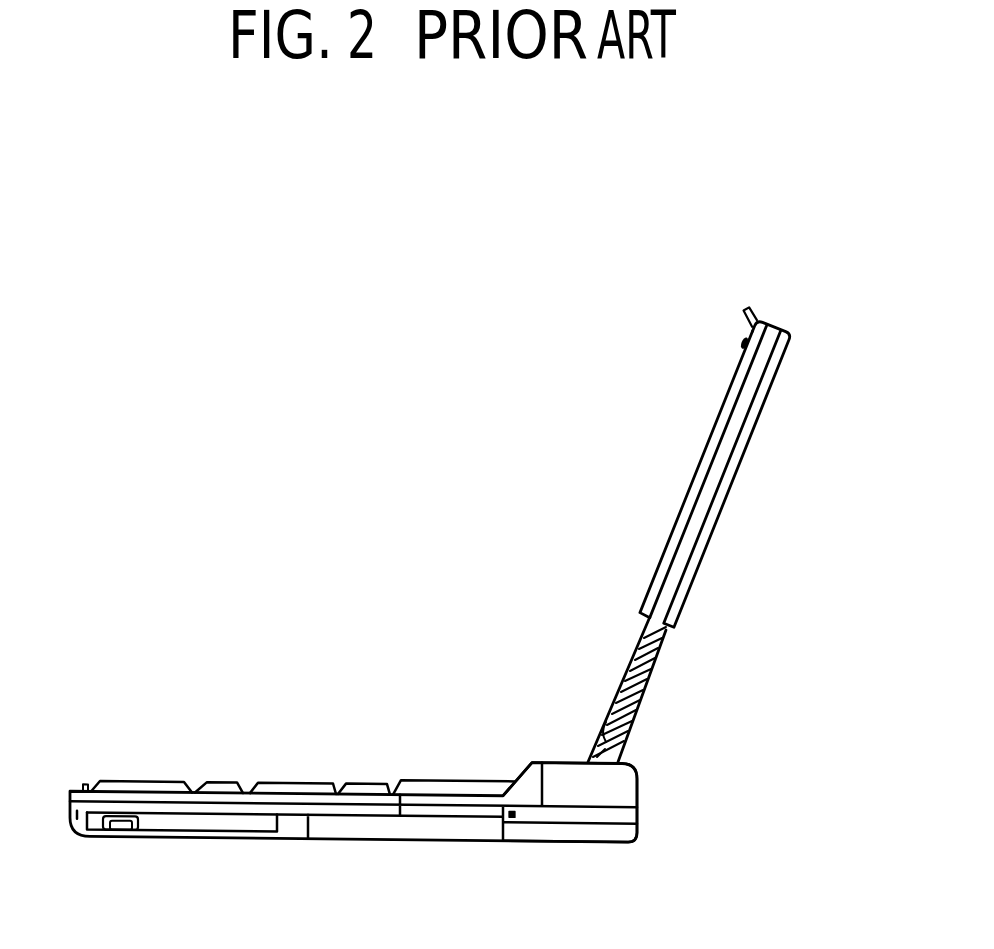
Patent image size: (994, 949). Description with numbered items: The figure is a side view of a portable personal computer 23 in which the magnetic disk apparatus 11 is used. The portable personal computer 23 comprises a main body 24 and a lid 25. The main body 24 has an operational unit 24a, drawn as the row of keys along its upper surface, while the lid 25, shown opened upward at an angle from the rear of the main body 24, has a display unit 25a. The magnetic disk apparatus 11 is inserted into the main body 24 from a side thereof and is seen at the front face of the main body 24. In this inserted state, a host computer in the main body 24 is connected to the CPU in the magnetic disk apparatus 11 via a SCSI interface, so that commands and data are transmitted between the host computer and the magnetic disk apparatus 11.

The portable personal computer 23 is at (398, 290).
The lid 25 is at (752, 484).
The display unit 25a is at (690, 503).
The main body 24 is at (235, 853).
The operational unit 24a is at (298, 782).
The magnetic disk apparatus 11 is at (406, 832).